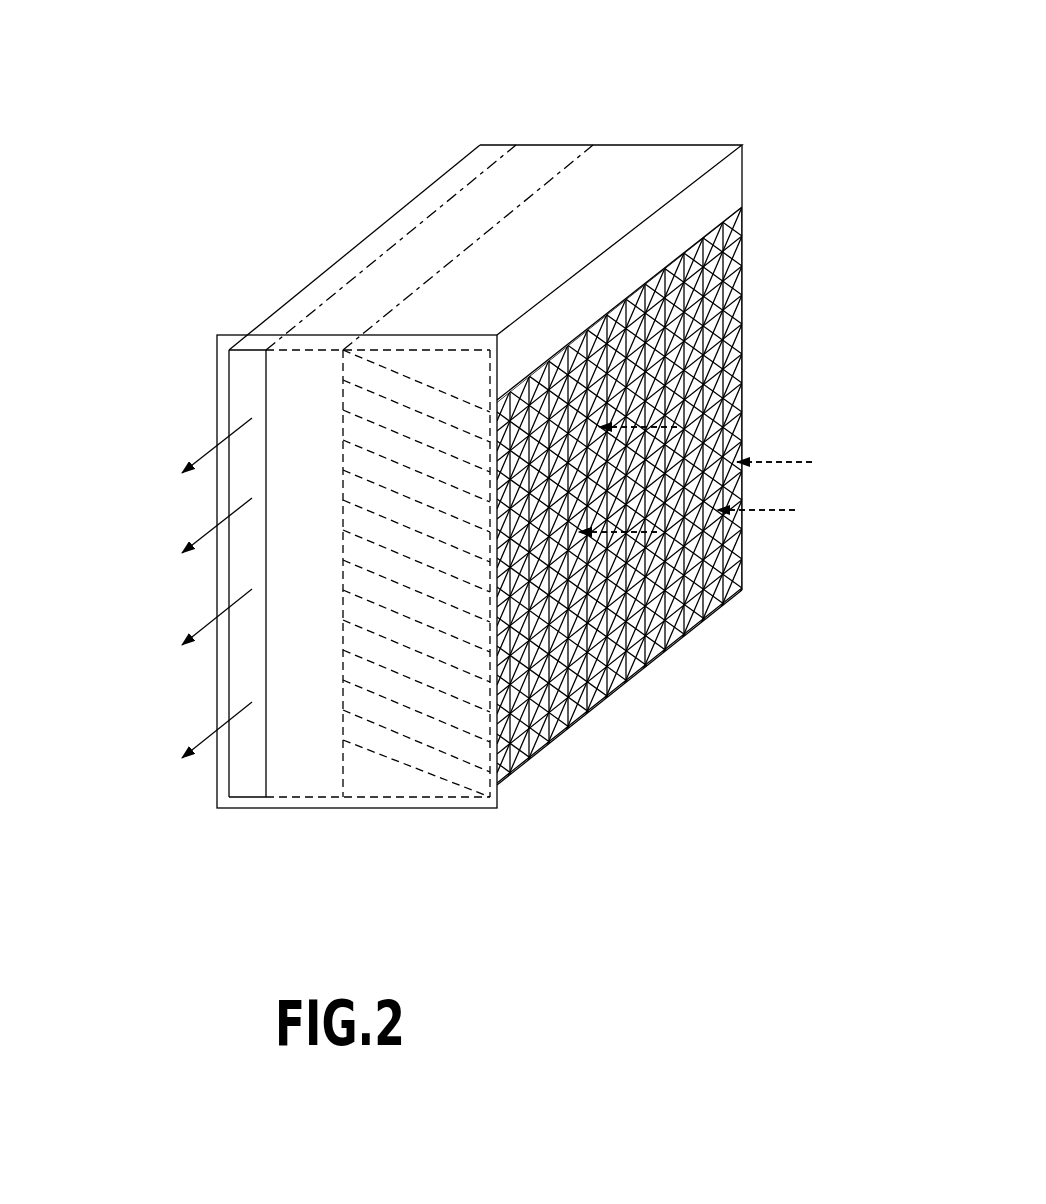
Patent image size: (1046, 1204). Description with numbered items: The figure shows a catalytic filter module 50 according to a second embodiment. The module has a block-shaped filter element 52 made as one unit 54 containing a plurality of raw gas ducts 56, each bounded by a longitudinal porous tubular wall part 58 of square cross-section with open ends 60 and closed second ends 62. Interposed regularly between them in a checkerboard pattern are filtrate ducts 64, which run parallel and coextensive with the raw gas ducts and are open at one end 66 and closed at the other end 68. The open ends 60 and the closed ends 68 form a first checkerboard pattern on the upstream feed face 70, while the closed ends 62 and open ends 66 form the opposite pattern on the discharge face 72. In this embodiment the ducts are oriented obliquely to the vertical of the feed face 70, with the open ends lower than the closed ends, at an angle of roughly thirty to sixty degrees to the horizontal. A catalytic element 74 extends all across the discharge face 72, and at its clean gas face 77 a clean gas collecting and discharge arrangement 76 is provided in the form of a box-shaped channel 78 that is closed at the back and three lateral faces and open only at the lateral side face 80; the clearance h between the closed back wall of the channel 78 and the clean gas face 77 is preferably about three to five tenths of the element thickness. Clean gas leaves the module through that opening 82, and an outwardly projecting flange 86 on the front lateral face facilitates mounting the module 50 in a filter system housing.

The catalytic filter module 50 is at (797, 288).
The filter element 52 is at (690, 126).
The unit 54 is at (513, 830).
The raw gas ducts 56 is at (730, 585).
The tubular wall part 58 is at (427, 753).
The open ends 60 is at (735, 346).
The closed second ends 62 is at (343, 725).
The filtrate ducts 64 is at (473, 743).
The open end 66 is at (342, 690).
The closed end 68 is at (737, 550).
The feed face 70 is at (777, 207).
The discharge face 72 is at (548, 182).
The catalytic element 74 is at (472, 213).
The clean gas collecting and discharge arrangement 76 is at (262, 292).
The clean gas face 77 is at (498, 162).
The box-shaped channel 78 is at (383, 226).
The clearance h is at (357, 272).
The lateral side face 80 is at (198, 389).
The opening 82 is at (243, 478).
The flange 86 is at (215, 348).